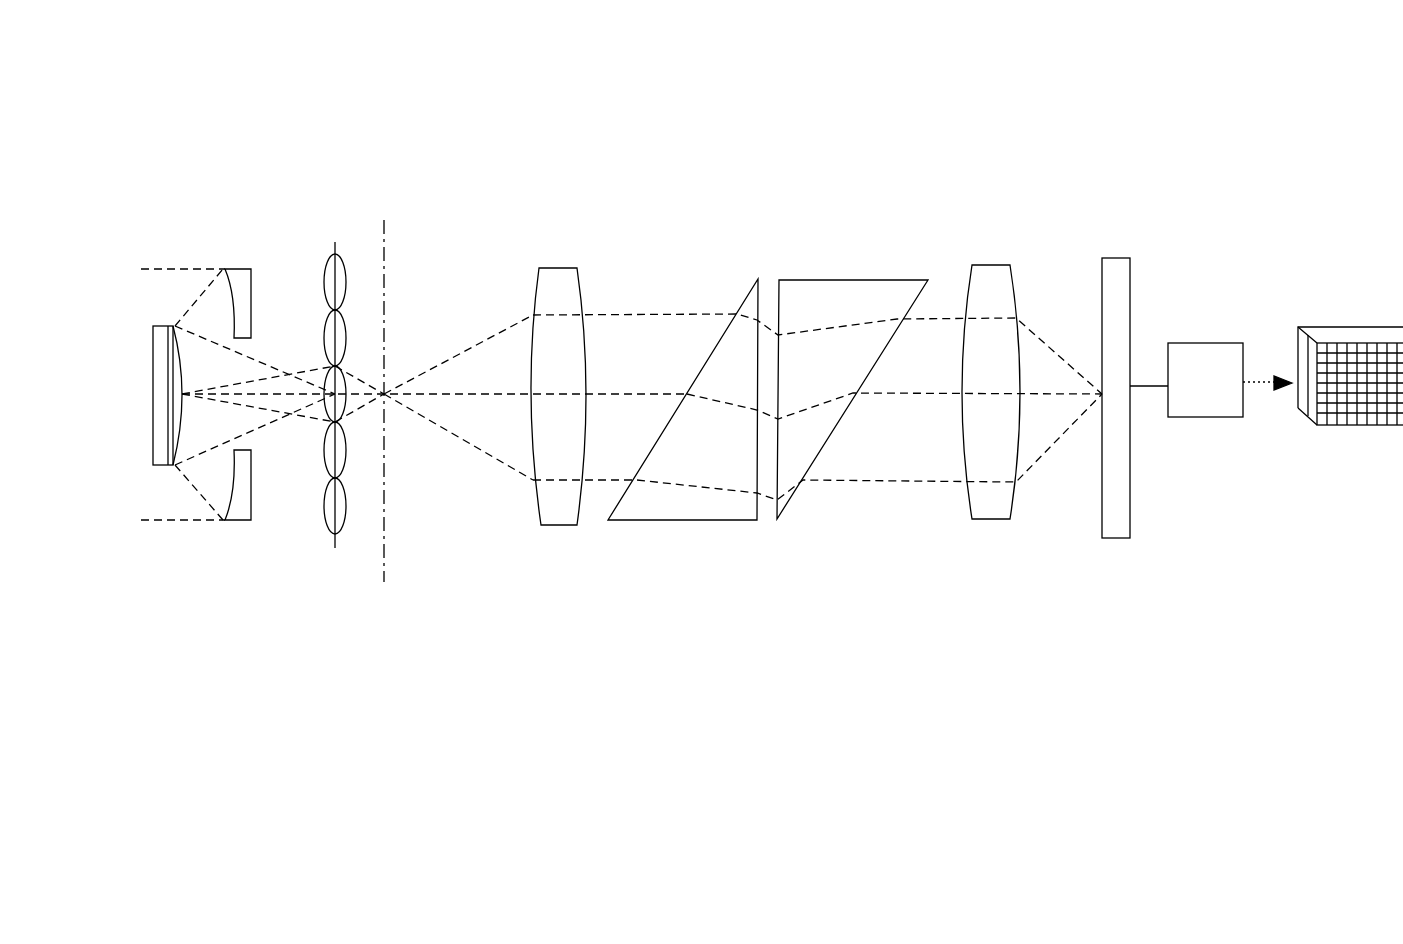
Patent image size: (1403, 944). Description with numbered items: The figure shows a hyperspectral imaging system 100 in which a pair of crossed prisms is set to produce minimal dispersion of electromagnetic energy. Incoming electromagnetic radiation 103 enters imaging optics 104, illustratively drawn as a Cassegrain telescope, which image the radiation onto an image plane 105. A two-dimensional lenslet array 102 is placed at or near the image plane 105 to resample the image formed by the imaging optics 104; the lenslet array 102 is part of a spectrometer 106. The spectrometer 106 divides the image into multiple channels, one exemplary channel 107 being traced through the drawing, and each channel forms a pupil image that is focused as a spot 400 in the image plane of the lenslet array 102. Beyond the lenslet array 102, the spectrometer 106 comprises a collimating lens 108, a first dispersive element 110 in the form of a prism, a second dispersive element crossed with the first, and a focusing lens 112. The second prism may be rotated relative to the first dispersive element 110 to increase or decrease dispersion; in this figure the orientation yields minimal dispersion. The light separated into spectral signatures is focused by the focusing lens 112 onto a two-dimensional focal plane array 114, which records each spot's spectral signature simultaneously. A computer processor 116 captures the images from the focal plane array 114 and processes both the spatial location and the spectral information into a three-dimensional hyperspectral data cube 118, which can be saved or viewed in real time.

The hyperspectral imaging system 100 is at (358, 130).
The lenslet array 102 is at (374, 324).
The incoming electromagnetic radiation 103 is at (142, 541).
The imaging optics 104 is at (130, 220).
The image plane 105 is at (322, 544).
The spectrometer 106 is at (1052, 192).
The channel 107 is at (503, 453).
The collimating lens 108 is at (550, 297).
The dispersive element 110 is at (753, 305).
The focusing lens 112 is at (984, 513).
The focal plane array 114 is at (1123, 309).
The computer processor 116 is at (1217, 401).
The hyperspectral data cube 118 is at (1368, 408).
The spot 400 is at (401, 419).